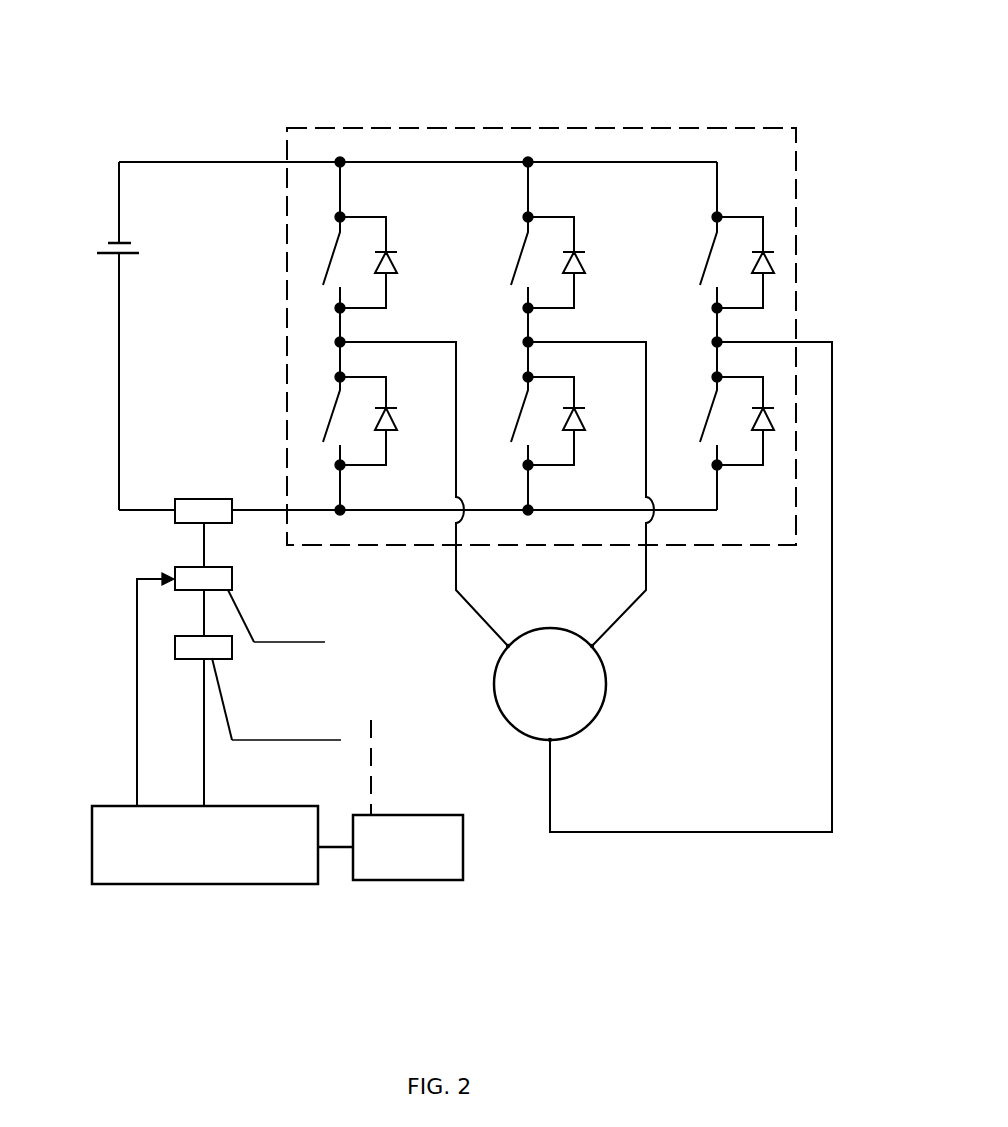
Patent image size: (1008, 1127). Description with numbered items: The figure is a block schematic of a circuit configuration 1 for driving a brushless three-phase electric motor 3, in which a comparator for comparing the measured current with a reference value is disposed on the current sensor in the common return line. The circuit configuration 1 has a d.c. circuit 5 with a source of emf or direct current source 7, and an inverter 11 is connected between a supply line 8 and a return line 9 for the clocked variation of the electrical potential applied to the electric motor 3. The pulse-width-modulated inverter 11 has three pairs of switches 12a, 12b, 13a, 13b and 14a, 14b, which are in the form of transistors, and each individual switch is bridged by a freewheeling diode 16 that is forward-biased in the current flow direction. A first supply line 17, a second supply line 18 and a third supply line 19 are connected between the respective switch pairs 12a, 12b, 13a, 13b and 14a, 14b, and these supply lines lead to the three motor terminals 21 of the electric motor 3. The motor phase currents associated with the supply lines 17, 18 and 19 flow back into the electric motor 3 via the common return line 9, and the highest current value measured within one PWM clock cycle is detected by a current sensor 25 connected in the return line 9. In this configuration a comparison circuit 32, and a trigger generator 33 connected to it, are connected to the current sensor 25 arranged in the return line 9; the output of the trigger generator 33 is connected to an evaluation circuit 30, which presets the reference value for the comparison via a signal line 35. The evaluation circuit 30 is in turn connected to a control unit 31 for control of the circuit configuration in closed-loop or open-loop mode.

The circuit configuration 1 is at (243, 93).
The electric motor 3 is at (503, 695).
The d.c. circuit 5 is at (117, 330).
The direct current source 7 is at (106, 248).
The supply line 8 is at (173, 162).
The return line 9 is at (145, 512).
The inverter 11 is at (772, 128).
The switch 12a is at (322, 262).
The switch 12b is at (322, 430).
The switch 13a is at (514, 270).
The switch 13b is at (517, 428).
The switch 14a is at (706, 262).
The switch 14b is at (706, 430).
The freewheeling diode 16 is at (396, 262).
The first supply line 17 is at (470, 608).
The second supply line 18 is at (625, 618).
The third supply line 19 is at (656, 832).
The motor terminal 21 is at (592, 642).
The current sensor 25 is at (205, 500).
The evaluation circuit 30 is at (117, 818).
The control unit 31 is at (463, 868).
The comparison circuit 32 is at (232, 583).
The trigger generator 33 is at (232, 650).
The signal line 35 is at (137, 680).